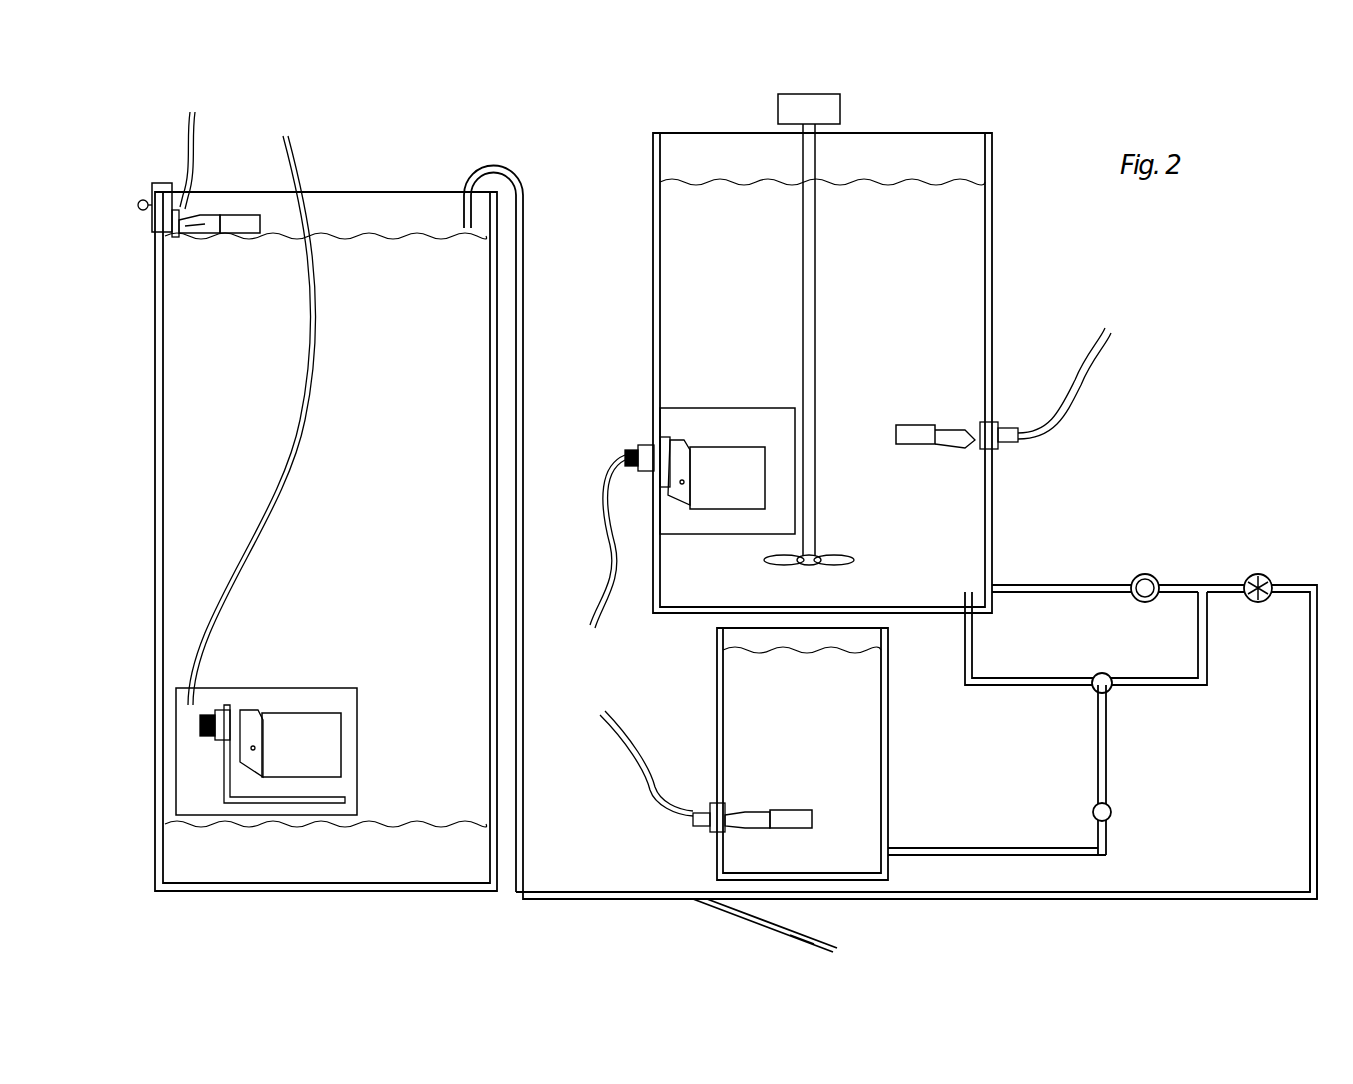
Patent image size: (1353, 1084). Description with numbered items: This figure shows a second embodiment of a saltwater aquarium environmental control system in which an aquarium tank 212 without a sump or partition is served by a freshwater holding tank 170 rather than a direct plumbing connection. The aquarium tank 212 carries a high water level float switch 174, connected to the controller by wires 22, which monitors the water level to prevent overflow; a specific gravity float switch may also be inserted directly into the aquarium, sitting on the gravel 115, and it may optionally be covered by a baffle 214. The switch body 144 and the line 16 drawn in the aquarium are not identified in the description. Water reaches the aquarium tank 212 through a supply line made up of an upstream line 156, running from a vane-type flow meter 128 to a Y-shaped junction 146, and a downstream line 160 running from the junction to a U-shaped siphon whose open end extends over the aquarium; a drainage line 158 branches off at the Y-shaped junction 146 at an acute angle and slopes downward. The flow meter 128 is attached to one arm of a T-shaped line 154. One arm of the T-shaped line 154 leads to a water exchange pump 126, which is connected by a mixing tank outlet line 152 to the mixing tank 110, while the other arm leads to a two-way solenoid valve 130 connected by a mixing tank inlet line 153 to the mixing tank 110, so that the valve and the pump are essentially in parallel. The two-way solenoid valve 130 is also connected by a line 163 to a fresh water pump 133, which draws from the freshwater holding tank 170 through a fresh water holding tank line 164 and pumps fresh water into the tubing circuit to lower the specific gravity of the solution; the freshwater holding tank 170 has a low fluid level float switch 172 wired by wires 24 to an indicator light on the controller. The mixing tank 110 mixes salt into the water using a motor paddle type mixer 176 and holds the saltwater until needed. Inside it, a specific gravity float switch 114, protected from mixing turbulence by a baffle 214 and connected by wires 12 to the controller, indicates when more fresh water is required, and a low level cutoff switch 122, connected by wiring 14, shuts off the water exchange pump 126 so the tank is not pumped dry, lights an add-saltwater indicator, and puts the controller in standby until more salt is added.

The wires 12 is at (605, 608).
The wiring 14 is at (1080, 362).
The tube 16 is at (296, 152).
The wires 22 is at (190, 112).
The wires 24 is at (615, 736).
The mixing tank 110 is at (1008, 298).
The specific gravity float switch 114 is at (746, 492).
The gravel 115 is at (350, 878).
The low level cutoff switch 122 is at (918, 425).
The water exchange pump 126 is at (1145, 574).
The vane-type flow meter 128 is at (1258, 574).
The 2-way solenoid valve 130 is at (1110, 690).
The fresh water pump 133 is at (1112, 820).
The sensor 144 is at (322, 760).
The Y-shaped junction 146 is at (693, 901).
The mixing tank outlet line 152 is at (1042, 585).
The mixing tank inlet line 153 is at (1010, 678).
The T-shaped line 154 is at (1195, 585).
The upstream line 156 is at (1308, 800).
The drainage line 158 is at (790, 936).
The downstream line 160 is at (530, 826).
The line 163 is at (1098, 720).
The fresh water holding tank line 164 is at (958, 848).
The freshwater holding tank 170 is at (900, 762).
The low fluid level float switch 172 is at (770, 810).
The high water level float switch 174 is at (230, 214).
The motor paddle type mixer 176 is at (815, 335).
The aquarium tank 212 is at (530, 152).
The baffle 214 is at (285, 688).